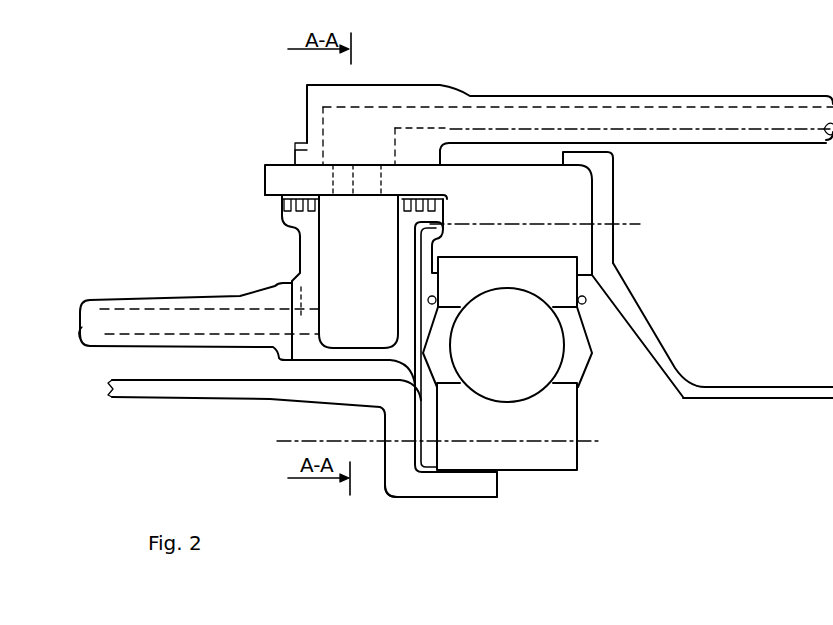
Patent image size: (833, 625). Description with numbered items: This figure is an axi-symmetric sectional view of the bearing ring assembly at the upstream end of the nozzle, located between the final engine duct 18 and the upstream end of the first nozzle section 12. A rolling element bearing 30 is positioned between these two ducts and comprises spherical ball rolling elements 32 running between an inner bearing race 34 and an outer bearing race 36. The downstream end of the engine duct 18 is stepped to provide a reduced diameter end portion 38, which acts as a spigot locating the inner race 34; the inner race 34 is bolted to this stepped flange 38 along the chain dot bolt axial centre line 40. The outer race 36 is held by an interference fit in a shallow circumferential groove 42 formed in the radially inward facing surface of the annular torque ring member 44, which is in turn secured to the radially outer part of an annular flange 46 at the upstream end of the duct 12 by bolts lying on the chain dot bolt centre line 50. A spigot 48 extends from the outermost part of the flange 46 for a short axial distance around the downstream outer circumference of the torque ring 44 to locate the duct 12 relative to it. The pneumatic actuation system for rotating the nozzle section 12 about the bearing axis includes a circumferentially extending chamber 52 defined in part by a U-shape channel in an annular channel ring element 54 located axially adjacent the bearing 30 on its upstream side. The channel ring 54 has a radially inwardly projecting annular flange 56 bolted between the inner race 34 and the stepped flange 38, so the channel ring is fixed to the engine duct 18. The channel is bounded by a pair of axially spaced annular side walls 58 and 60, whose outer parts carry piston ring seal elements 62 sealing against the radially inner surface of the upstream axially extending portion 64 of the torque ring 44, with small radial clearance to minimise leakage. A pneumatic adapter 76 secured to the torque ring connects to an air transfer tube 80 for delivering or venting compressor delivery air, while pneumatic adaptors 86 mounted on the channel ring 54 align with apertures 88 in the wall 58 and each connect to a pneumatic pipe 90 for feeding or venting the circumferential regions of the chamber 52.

The first nozzle section 12 is at (768, 394).
The final engine duct 18 is at (287, 393).
The rolling element bearing 30 is at (594, 371).
The spherical ball rolling elements 32 is at (552, 338).
The inner bearing race 34 is at (553, 458).
The outer bearing race 36 is at (568, 266).
The reduced diameter end portion 38 is at (473, 487).
The bolt axial centre line 40 is at (580, 441).
The shallow circumferential groove 42 is at (540, 252).
The annular torque ring member 44 is at (537, 178).
The annular flange 46 is at (603, 223).
The spigot 48 is at (587, 160).
The chain dot bolt centre line 50 is at (630, 226).
The circumferentially extending chamber 52 is at (377, 297).
The annular channel ring element 54 is at (300, 266).
The radially inwardly projecting annular flange 56 is at (423, 411).
The annular side wall 58 is at (317, 235).
The annular side wall 60 is at (405, 242).
The piston ring seal elements 62 is at (283, 195).
The upstream axially extending portion 64 is at (322, 173).
The pneumatic adapter 76 is at (407, 100).
The air transfer tube 80 is at (765, 107).
The pneumatic adaptors 86 is at (225, 326).
The apertures 88 is at (353, 177).
The pneumatic pipe 90 is at (123, 340).